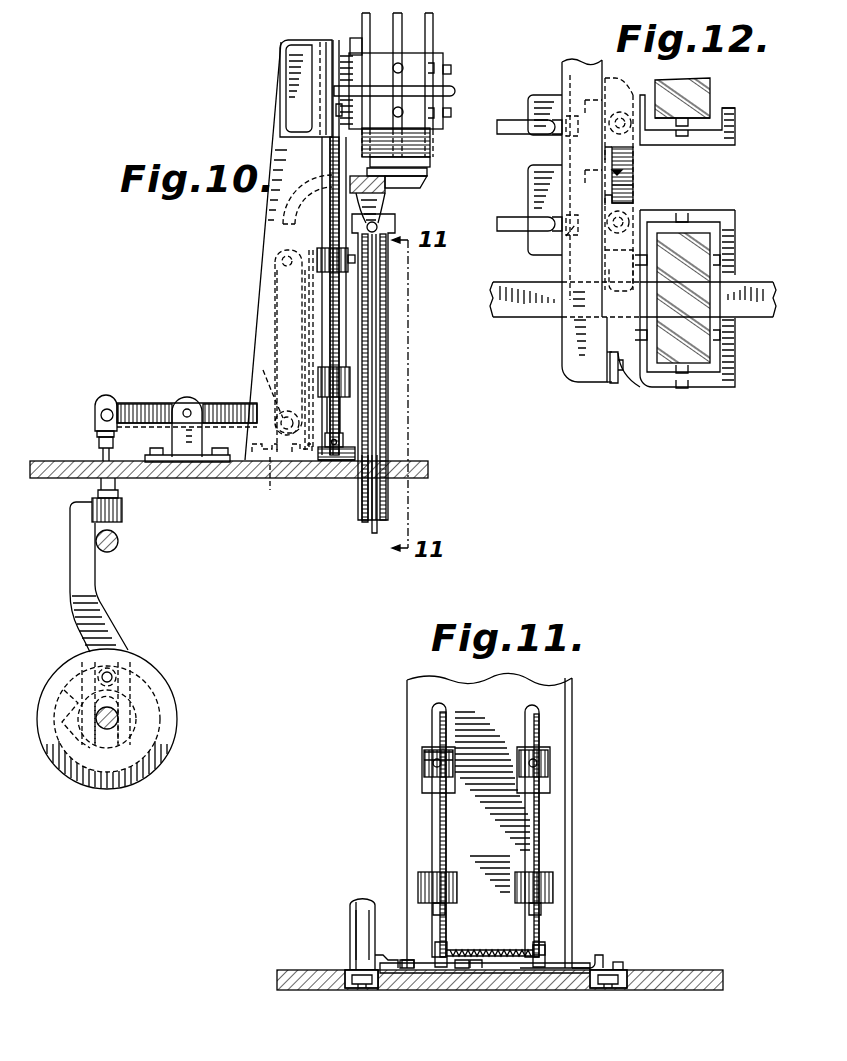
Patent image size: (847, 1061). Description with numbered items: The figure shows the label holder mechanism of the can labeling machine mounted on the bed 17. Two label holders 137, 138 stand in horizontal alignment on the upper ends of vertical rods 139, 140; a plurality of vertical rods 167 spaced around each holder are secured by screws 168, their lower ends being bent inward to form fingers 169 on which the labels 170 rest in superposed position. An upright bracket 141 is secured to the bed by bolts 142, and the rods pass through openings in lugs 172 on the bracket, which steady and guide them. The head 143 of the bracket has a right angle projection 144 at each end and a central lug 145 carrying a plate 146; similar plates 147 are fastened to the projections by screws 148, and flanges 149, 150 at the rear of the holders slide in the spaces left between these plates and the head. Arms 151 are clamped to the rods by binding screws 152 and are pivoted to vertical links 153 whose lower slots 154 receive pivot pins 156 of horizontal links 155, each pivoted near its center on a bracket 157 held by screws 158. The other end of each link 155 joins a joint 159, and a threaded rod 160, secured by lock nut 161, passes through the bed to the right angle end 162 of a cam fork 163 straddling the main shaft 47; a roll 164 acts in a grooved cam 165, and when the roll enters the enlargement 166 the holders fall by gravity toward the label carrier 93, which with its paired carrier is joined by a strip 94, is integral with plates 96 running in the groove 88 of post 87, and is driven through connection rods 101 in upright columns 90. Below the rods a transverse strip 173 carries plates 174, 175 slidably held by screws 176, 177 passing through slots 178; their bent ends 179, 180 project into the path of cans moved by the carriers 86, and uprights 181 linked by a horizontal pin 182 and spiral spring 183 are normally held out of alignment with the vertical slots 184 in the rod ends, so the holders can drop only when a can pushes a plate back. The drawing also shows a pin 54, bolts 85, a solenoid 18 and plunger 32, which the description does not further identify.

In FIG. 10, the bed 17 is at (55, 478).
In FIG. 12, the bed 17 is at (633, 299).
In FIG. 11, the bed 17 is at (310, 990).
In FIG. 11, the solenoid 18 is at (355, 920).
In FIG. 11, the solenoid plunger 32 is at (352, 898).
In FIG. 10, the main shaft 47 is at (103, 728).
In FIG. 10, the pin 54 is at (118, 544).
In FIG. 11, the bolts 85 is at (362, 988).
In FIG. 11, the carriers 86 is at (623, 965).
In FIG. 10, the post 87 is at (388, 300).
In FIG. 10, the longitudinal groove 88 is at (388, 330).
In FIG. 10, the upright column 90 is at (362, 505).
In FIG. 10, the label carrier 93 is at (427, 172).
In FIG. 10, the strip 94 is at (372, 194).
In FIG. 10, the plate 96 is at (405, 188).
In FIG. 10, the connection rod 101 is at (386, 362).
In FIG. 10, the label holder 137 is at (440, 58).
In FIG. 12, the label holder 137 is at (655, 390).
In FIG. 12, the label holder 138 is at (735, 135).
In FIG. 10, the vertical rod 139 is at (335, 305).
In FIG. 12, the vertical rod 139 is at (623, 267).
In FIG. 11, the vertical rod 139 is at (440, 815).
In FIG. 12, the vertical rod 140 is at (622, 112).
In FIG. 11, the vertical rod 140 is at (540, 812).
In FIG. 10, the upright bracket 141 is at (268, 236).
In FIG. 12, the upright bracket 141 is at (548, 96).
In FIG. 11, the upright bracket 141 is at (410, 699).
In FIG. 10, the bolts 142 is at (279, 481).
In FIG. 10, the head 143 is at (310, 64).
In FIG. 12, the head 143 is at (562, 350).
In FIG. 12, the right angle projection 144 is at (606, 383).
In FIG. 12, the lug 145 is at (633, 156).
In FIG. 12, the plate 146 is at (633, 186).
In FIG. 10, the plate 147 is at (336, 42).
In FIG. 12, the plate 147 is at (614, 383).
In FIG. 10, the screws 148 is at (338, 108).
In FIG. 12, the screws 148 is at (622, 172).
In FIG. 12, the flange 149 is at (607, 360).
In FIG. 12, the flange 150 is at (633, 200).
In FIG. 10, the arm 151 is at (340, 272).
In FIG. 11, the arm 151 is at (424, 770).
In FIG. 10, the binding screw 152 is at (355, 259).
In FIG. 11, the binding screw 152 is at (424, 758).
In FIG. 10, the vertical link 153 is at (285, 326).
In FIG. 12, the vertical link 153 is at (548, 232).
In FIG. 10, the vertical slot 154 is at (278, 418).
In FIG. 10, the horizontal link 155 is at (153, 403).
In FIG. 12, the horizontal link 155 is at (505, 134).
In FIG. 10, the pivot pin 156 is at (262, 370).
In FIG. 12, the pivot pin 156 is at (560, 256).
In FIG. 10, the bracket 157 is at (187, 402).
In FIG. 10, the screws 158 is at (224, 448).
In FIG. 10, the joint 159 is at (100, 413).
In FIG. 10, the rod 160 is at (100, 452).
In FIG. 10, the lock nut 161 is at (114, 438).
In FIG. 10, the right angle end 162 is at (122, 508).
In FIG. 10, the cam fork 163 is at (95, 582).
In FIG. 10, the roll 164 is at (113, 674).
In FIG. 10, the grooved cam 165 is at (145, 697).
In FIG. 10, the enlargement 166 is at (62, 722).
In FIG. 10, the vertical rods 167 is at (433, 23).
In FIG. 12, the vertical rods 167 is at (686, 371).
In FIG. 10, the screws 168 is at (451, 69).
In FIG. 12, the screws 168 is at (684, 388).
In FIG. 10, the fingers 169 is at (430, 163).
In FIG. 10, the labels 170 is at (430, 136).
In FIG. 12, the labels 170 is at (710, 92).
In FIG. 10, the lugs 172 is at (350, 385).
In FIG. 11, the lugs 172 is at (553, 882).
In FIG. 10, the transverse strip 173 is at (330, 478).
In FIG. 11, the transverse strip 173 is at (480, 975).
In FIG. 10, the plate 174 is at (355, 450).
In FIG. 12, the plate 174 is at (605, 299).
In FIG. 11, the plate 174 is at (440, 975).
In FIG. 11, the plate 175 is at (545, 990).
In FIG. 11, the screw 176 is at (408, 960).
In FIG. 11, the screw 177 is at (475, 975).
In FIG. 11, the slots 178 is at (405, 975).
In FIG. 11, the bent end 179 is at (378, 958).
In FIG. 11, the bent end 180 is at (598, 958).
In FIG. 10, the upright 181 is at (343, 437).
In FIG. 11, the upright 181 is at (447, 950).
In FIG. 11, the horizontal pin 182 is at (533, 950).
In FIG. 11, the spiral spring 183 is at (490, 942).
In FIG. 11, the vertical slot 184 is at (433, 910).